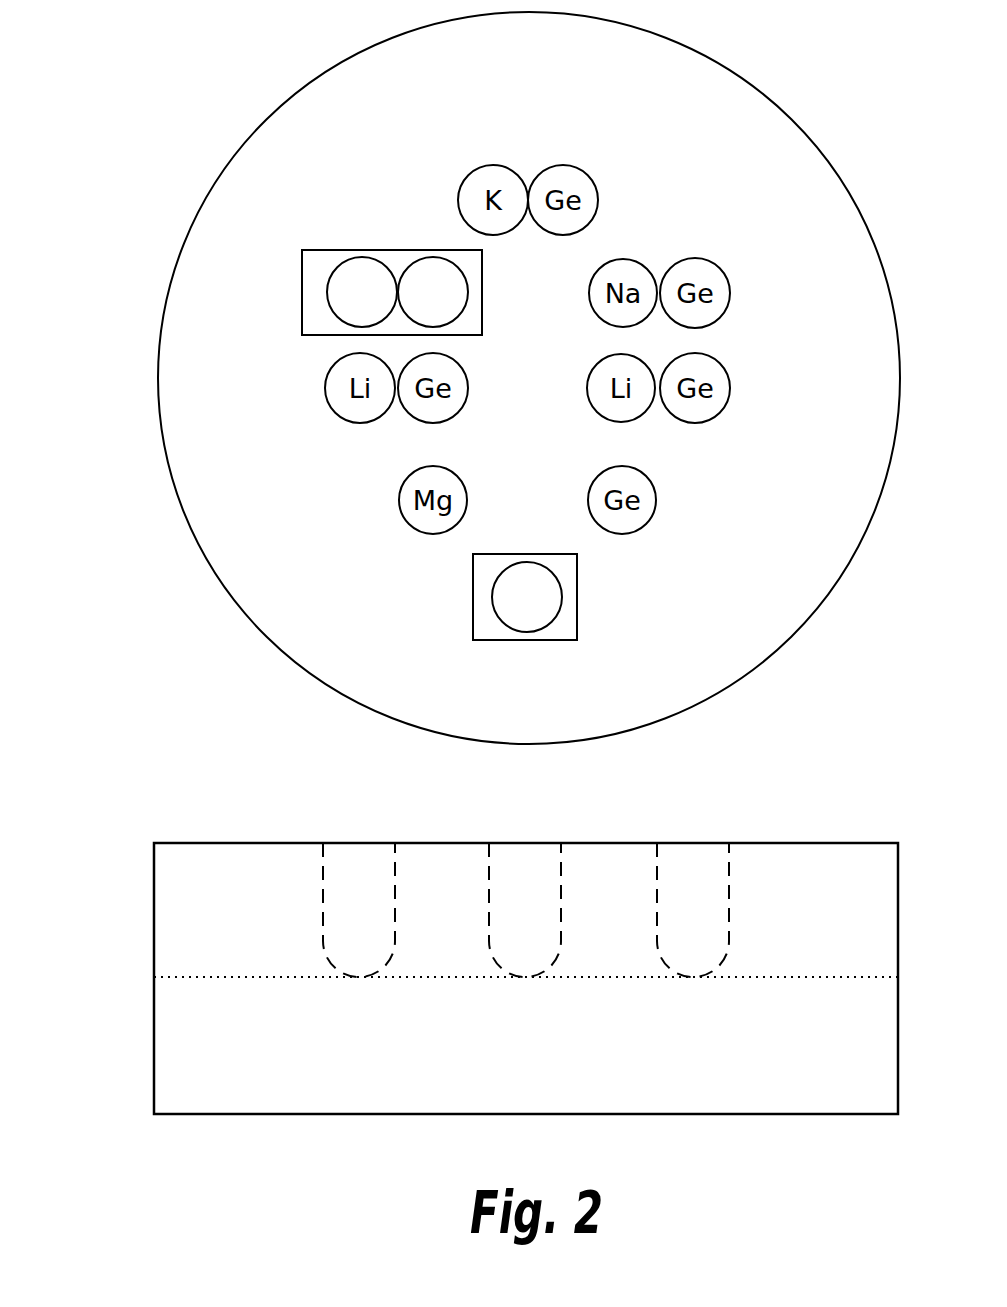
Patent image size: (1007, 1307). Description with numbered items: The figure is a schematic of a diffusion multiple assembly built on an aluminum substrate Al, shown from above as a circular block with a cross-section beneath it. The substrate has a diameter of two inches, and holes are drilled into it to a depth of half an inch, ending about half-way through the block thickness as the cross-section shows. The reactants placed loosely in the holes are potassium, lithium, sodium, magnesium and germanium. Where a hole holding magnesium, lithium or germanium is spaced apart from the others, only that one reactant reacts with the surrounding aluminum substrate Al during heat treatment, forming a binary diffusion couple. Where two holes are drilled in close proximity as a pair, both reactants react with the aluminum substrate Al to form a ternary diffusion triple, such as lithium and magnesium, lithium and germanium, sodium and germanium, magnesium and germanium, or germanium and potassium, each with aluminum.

The aluminum substrate Al is at (526, 862).